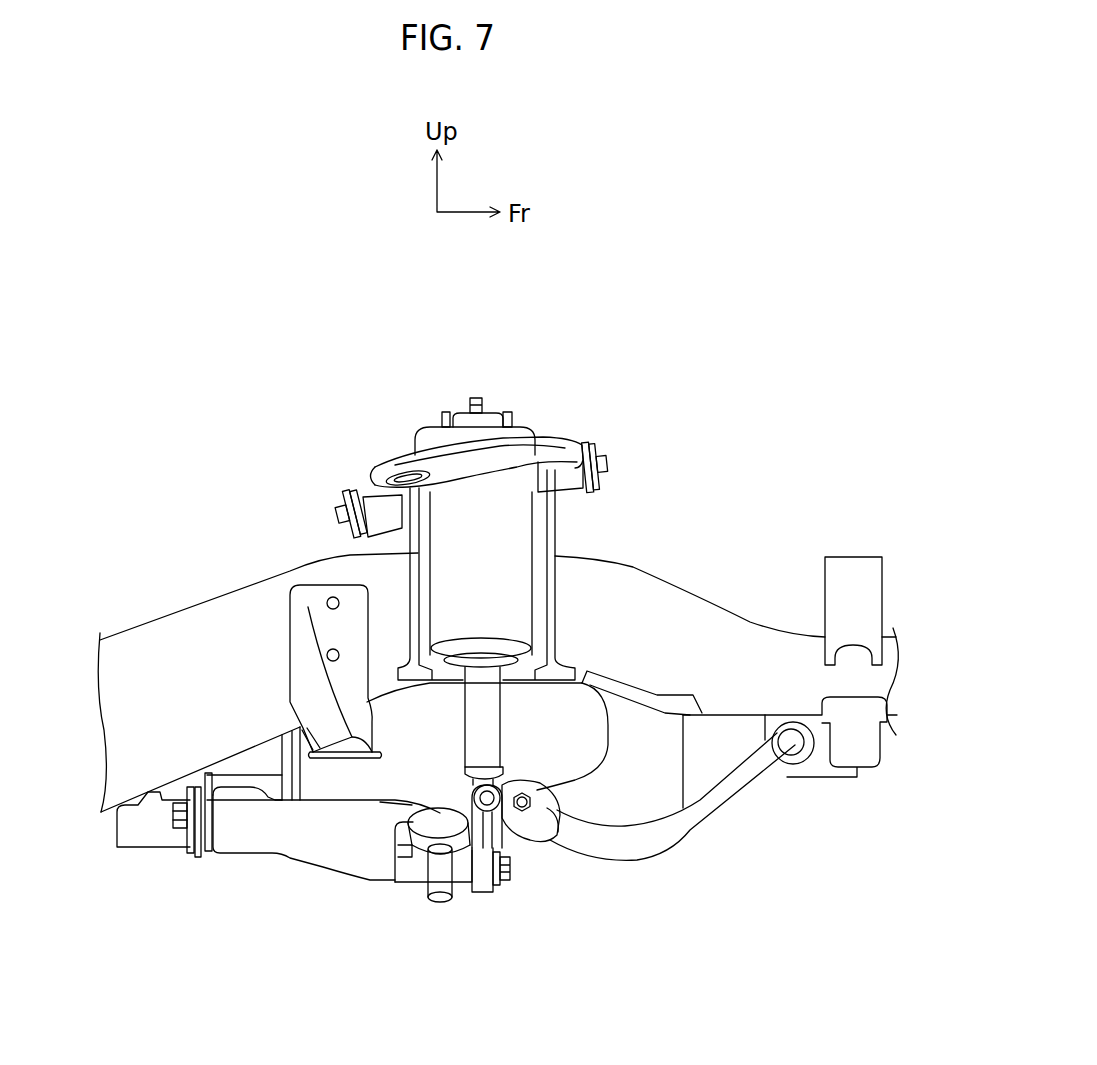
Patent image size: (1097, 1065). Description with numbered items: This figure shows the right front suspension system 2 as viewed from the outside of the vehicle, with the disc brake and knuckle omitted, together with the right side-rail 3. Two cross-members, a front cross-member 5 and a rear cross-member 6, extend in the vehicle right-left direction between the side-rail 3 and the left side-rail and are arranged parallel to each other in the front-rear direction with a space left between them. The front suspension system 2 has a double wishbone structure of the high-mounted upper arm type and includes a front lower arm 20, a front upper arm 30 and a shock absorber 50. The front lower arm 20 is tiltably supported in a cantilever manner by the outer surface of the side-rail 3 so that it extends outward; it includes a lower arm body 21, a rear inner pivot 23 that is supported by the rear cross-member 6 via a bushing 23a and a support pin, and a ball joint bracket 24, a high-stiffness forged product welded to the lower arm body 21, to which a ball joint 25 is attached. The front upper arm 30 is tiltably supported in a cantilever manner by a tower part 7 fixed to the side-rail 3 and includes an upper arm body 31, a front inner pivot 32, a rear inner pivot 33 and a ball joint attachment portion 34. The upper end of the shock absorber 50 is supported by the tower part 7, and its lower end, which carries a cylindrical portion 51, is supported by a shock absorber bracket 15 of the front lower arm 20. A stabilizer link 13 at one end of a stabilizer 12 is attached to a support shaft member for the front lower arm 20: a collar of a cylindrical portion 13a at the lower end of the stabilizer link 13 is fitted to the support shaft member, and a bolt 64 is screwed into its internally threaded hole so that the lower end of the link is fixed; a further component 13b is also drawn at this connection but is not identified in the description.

The front suspension system 2 is at (549, 366).
The side-rail 3 is at (674, 578).
The front cross-member 5 is at (643, 760).
The rear cross-member 6 is at (273, 753).
The tower part 7 is at (571, 512).
The stabilizer 12 is at (730, 793).
The stabilizer link 13 is at (470, 827).
The cylindrical portion 13a is at (483, 893).
The link washer 13b is at (496, 887).
The shock absorber bracket 15 is at (517, 847).
The front lower arm 20 is at (415, 957).
The lower arm body 21 is at (356, 890).
The ball joint bracket 24 is at (415, 896).
The ball joint 25 is at (427, 827).
The rear inner pivot 23 is at (207, 853).
The bushing 23a is at (198, 837).
The front upper arm 30 is at (391, 440).
The upper arm body 31 is at (555, 445).
The front inner pivot 32 is at (603, 483).
The rear inner pivot 33 is at (362, 530).
The ball joint attachment portion 34 is at (417, 490).
The shock absorber 50 is at (505, 598).
The cylindrical portion 51 is at (482, 760).
The bolt 64 is at (510, 880).